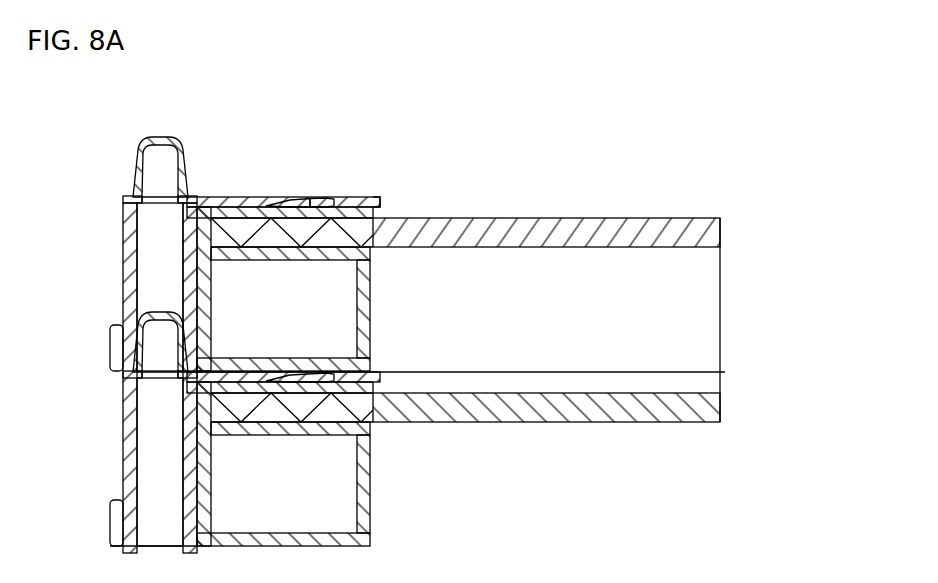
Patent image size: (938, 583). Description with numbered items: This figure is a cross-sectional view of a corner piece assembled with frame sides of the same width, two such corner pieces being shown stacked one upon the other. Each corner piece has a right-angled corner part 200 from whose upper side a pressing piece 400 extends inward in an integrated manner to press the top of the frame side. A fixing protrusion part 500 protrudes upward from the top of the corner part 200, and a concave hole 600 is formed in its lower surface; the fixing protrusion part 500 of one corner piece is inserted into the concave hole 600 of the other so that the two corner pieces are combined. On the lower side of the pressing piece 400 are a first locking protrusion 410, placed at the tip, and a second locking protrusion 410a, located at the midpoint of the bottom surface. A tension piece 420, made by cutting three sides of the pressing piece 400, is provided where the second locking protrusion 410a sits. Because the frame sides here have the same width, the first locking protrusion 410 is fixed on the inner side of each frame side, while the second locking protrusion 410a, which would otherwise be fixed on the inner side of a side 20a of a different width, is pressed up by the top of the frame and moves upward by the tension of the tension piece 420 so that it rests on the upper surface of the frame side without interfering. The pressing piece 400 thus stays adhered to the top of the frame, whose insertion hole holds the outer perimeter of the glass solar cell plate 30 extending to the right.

The fixing protrusion part 500 is at (133, 158).
The corner part 200 is at (128, 250).
The concave hole 600 is at (152, 290).
The pressing piece 400 is at (342, 197).
The first locking protrusion 410 is at (385, 207).
The second locking protrusion 410a is at (327, 197).
The tension piece 420 is at (283, 197).
The solar cell plate 30 is at (598, 226).
The side of the frame 20a is at (358, 297).